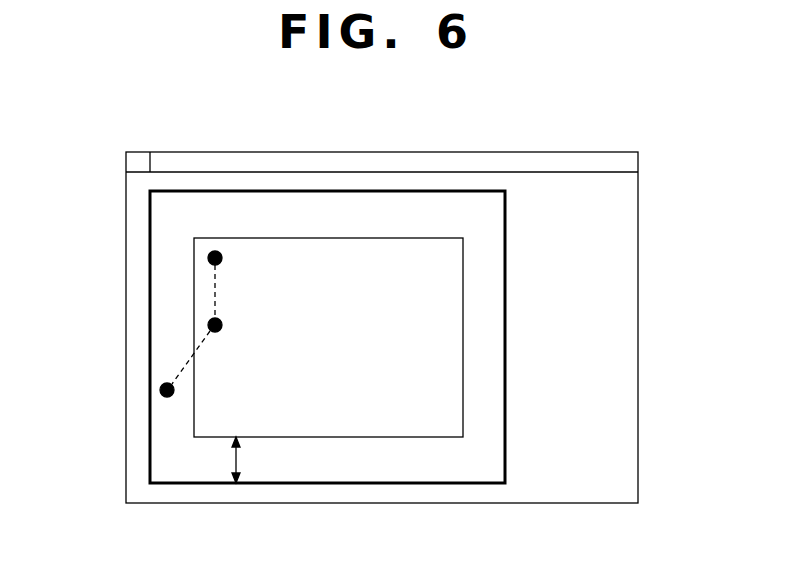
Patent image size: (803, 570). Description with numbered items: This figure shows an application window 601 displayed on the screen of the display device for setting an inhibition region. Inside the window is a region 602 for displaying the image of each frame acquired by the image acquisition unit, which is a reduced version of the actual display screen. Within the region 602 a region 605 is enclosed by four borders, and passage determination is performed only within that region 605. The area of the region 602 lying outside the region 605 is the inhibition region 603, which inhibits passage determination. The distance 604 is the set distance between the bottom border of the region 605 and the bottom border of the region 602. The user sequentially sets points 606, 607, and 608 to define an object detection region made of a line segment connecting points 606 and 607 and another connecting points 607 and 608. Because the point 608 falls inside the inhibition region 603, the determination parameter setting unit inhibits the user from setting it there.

The application window 601 is at (638, 238).
The region 602 is at (505, 191).
The inhibition region 603 is at (488, 422).
The distance 604 is at (238, 460).
The region 605 is at (432, 330).
The point 606 is at (208, 259).
The point 607 is at (208, 326).
The point 608 is at (160, 391).